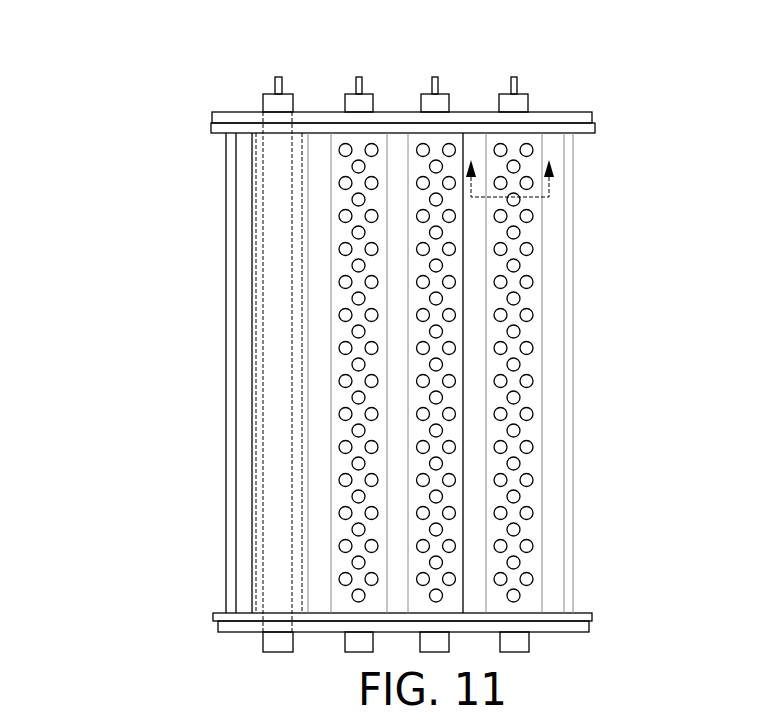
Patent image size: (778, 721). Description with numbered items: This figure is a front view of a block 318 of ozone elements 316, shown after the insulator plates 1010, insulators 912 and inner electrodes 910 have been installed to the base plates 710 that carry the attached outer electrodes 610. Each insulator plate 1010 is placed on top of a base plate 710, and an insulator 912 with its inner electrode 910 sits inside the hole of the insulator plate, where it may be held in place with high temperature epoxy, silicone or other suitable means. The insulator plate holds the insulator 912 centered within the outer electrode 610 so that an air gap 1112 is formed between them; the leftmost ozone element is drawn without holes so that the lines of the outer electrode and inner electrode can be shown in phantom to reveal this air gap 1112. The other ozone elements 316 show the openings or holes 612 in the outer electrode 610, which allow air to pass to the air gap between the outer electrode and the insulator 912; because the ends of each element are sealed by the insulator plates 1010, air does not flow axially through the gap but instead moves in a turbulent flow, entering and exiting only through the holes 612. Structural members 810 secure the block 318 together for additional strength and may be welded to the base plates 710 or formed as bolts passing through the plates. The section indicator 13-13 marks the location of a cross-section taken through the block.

The block 318 is at (104, 106).
The insulator plate 1010 is at (222, 112).
The base plate 710 is at (593, 131).
The inner electrode 910 is at (432, 88).
The insulator 912 is at (347, 93).
The air gap 1112 is at (262, 265).
The structural member 810 is at (227, 437).
The outer electrode 610 is at (250, 350).
The holes 612 is at (528, 513).
The section line 13-13 is at (549, 197).
The ozone element 316 is at (552, 404).